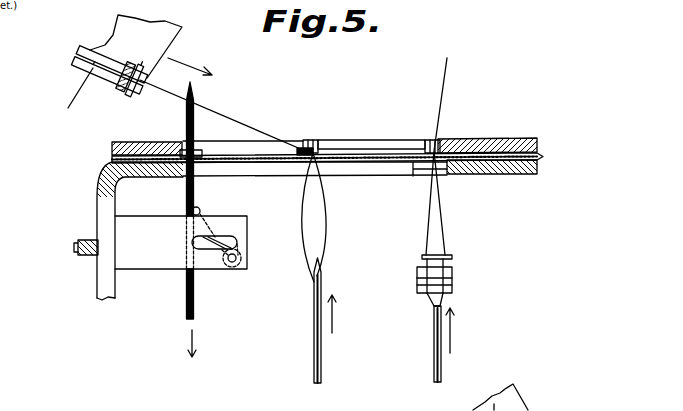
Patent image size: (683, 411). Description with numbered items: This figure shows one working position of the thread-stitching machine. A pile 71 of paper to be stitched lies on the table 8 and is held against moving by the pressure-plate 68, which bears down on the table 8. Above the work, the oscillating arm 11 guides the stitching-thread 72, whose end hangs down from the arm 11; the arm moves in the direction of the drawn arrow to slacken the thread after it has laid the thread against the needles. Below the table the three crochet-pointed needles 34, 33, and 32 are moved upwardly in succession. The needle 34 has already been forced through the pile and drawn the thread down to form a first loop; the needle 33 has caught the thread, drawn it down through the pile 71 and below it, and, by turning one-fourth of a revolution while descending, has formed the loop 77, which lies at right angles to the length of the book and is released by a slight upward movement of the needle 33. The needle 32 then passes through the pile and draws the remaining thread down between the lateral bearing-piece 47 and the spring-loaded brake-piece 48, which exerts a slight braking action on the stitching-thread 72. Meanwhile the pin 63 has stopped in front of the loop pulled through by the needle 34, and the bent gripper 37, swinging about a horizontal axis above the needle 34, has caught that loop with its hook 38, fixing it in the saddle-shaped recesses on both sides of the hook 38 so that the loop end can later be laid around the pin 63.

The table 8 is at (143, 180).
The oscillating arm 11 is at (120, 40).
The needle 32 is at (198, 300).
The needle 33 is at (315, 353).
The needle 34 is at (441, 356).
The bent gripper 37 is at (452, 283).
The hook 38 is at (445, 302).
The lateral bearing-piece 47 is at (147, 263).
The brake-piece 48 is at (199, 210).
The pin 63 is at (451, 254).
The pressure-plate 68 is at (381, 139).
The pile of paper 71 is at (538, 154).
The stitching-thread 72 is at (97, 72).
The loop 77 is at (318, 234).